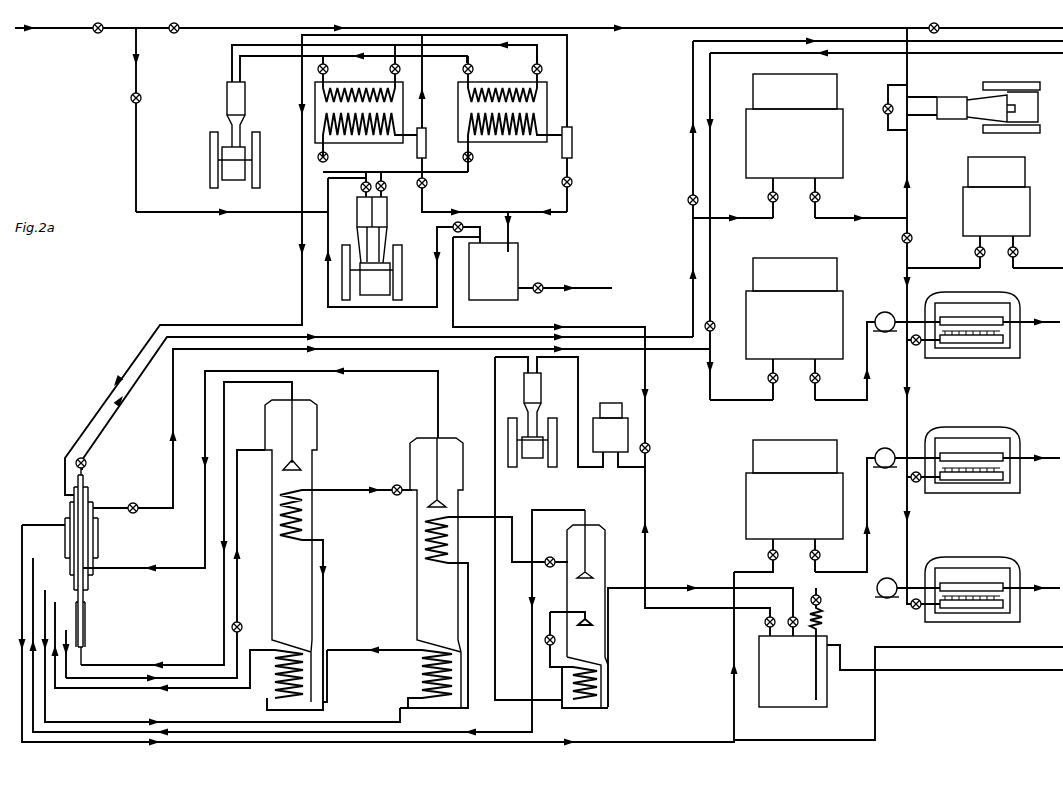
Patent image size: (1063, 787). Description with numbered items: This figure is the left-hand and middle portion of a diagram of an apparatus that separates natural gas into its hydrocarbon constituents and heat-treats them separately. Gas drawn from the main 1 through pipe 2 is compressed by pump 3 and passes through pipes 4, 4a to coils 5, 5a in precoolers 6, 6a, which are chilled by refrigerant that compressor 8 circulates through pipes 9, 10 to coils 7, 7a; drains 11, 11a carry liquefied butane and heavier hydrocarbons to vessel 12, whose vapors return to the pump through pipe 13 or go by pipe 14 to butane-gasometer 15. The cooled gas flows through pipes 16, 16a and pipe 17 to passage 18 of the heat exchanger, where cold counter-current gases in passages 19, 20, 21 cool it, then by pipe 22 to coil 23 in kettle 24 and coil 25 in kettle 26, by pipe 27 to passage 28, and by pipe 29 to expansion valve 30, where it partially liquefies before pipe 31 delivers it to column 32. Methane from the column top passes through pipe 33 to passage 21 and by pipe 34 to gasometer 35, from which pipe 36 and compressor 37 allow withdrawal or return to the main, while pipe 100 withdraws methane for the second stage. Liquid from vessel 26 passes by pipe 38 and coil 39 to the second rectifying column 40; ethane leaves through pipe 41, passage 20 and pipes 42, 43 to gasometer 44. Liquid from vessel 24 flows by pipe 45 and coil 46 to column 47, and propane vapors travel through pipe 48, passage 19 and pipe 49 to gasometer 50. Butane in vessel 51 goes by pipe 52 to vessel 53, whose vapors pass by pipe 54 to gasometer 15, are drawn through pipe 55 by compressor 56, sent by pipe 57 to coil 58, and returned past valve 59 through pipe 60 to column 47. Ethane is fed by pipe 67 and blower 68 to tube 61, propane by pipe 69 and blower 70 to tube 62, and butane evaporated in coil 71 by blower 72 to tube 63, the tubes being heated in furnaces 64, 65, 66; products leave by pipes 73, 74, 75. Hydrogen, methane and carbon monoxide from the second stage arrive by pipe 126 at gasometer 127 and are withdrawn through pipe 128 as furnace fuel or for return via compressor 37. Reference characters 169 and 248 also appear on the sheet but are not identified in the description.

The main 1 is at (55, 28).
The pipe 2 is at (137, 75).
The pump 3 is at (403, 239).
The pipe 4 is at (354, 172).
The pipe 4a is at (433, 172).
The coil 5 is at (250, 200).
The coil 5a is at (525, 133).
The precooler 6 is at (328, 80).
The precooler 6a is at (478, 76).
The coil 7 is at (353, 84).
The coil 7a is at (487, 84).
The compressor 8 is at (235, 135).
The pipe 9 is at (256, 44).
The pipe 10 is at (282, 58).
The drain 11 is at (426, 146).
The drain 11a is at (573, 144).
The vessel 12 is at (540, 256).
The pipe 13 is at (435, 232).
The pipe 14 is at (455, 319).
The butane-gasometer 15 is at (610, 427).
The pipe 16 is at (424, 102).
The pipe 16a is at (569, 94).
The pipe 17 is at (300, 239).
The passage 18 is at (88, 498).
The passage 19 is at (62, 536).
The passage 20 is at (70, 507).
The passage 21 is at (85, 480).
The pipe 22 is at (60, 588).
The coil 23 is at (420, 660).
The kettle 24 is at (420, 679).
The coil 25 is at (275, 690).
The kettle 26 is at (267, 710).
The pipe 27 is at (210, 694).
The passage 28 is at (87, 614).
The pipe 29 is at (246, 630).
The expansion valve 30 is at (240, 623).
The pipe 31 is at (238, 532).
The column 32 is at (291, 551).
The pipe 33 is at (293, 388).
The pipe 34 is at (376, 330).
The gasometer 35 is at (794, 146).
The pipe 36 is at (830, 218).
The compressor 37 is at (961, 316).
The pipe 38 is at (342, 485).
The coil 39 is at (304, 512).
The second rectifying column 40 is at (436, 573).
The pipe 41 is at (256, 368).
The pipe 42 is at (171, 398).
The pipe 43 is at (742, 398).
The gasometer 44 is at (794, 329).
The pipe 45 is at (486, 510).
The coil 46 is at (450, 540).
The column 47 is at (587, 608).
The pipe 48 is at (34, 705).
The pipe 49 is at (236, 744).
The gasometer 50 is at (788, 506).
The vessel 51 is at (562, 684).
The pipe 52 is at (610, 640).
The vessel 53 is at (911, 671).
The pipe 54 is at (648, 570).
The pipe 55 is at (580, 378).
The compressor 56 is at (542, 386).
The pipe 57 is at (497, 490).
The coil 58 is at (600, 675).
The valve 59 is at (556, 640).
The pipe 60 is at (560, 602).
The heating tube 61 is at (957, 320).
The heating tube 62 is at (958, 458).
The heating tube 63 is at (960, 581).
The furnace 64 is at (974, 310).
The furnace 65 is at (1008, 445).
The furnace 66 is at (977, 571).
The pipe 67 is at (850, 399).
The blower 68 is at (886, 311).
The pipe 69 is at (848, 568).
The blower 70 is at (890, 449).
The coil 71 is at (824, 620).
The blower 72 is at (888, 575).
The pipe 73 is at (1042, 319).
The pipe 74 is at (1044, 455).
The pipe 75 is at (1048, 585).
The pipe 100 is at (872, 38).
The pipe 126 is at (1050, 266).
The gasometer 127 is at (996, 212).
The pipe 128 is at (948, 265).
The line 169 is at (1036, 672).
The compressor unit 248 is at (1005, 54).